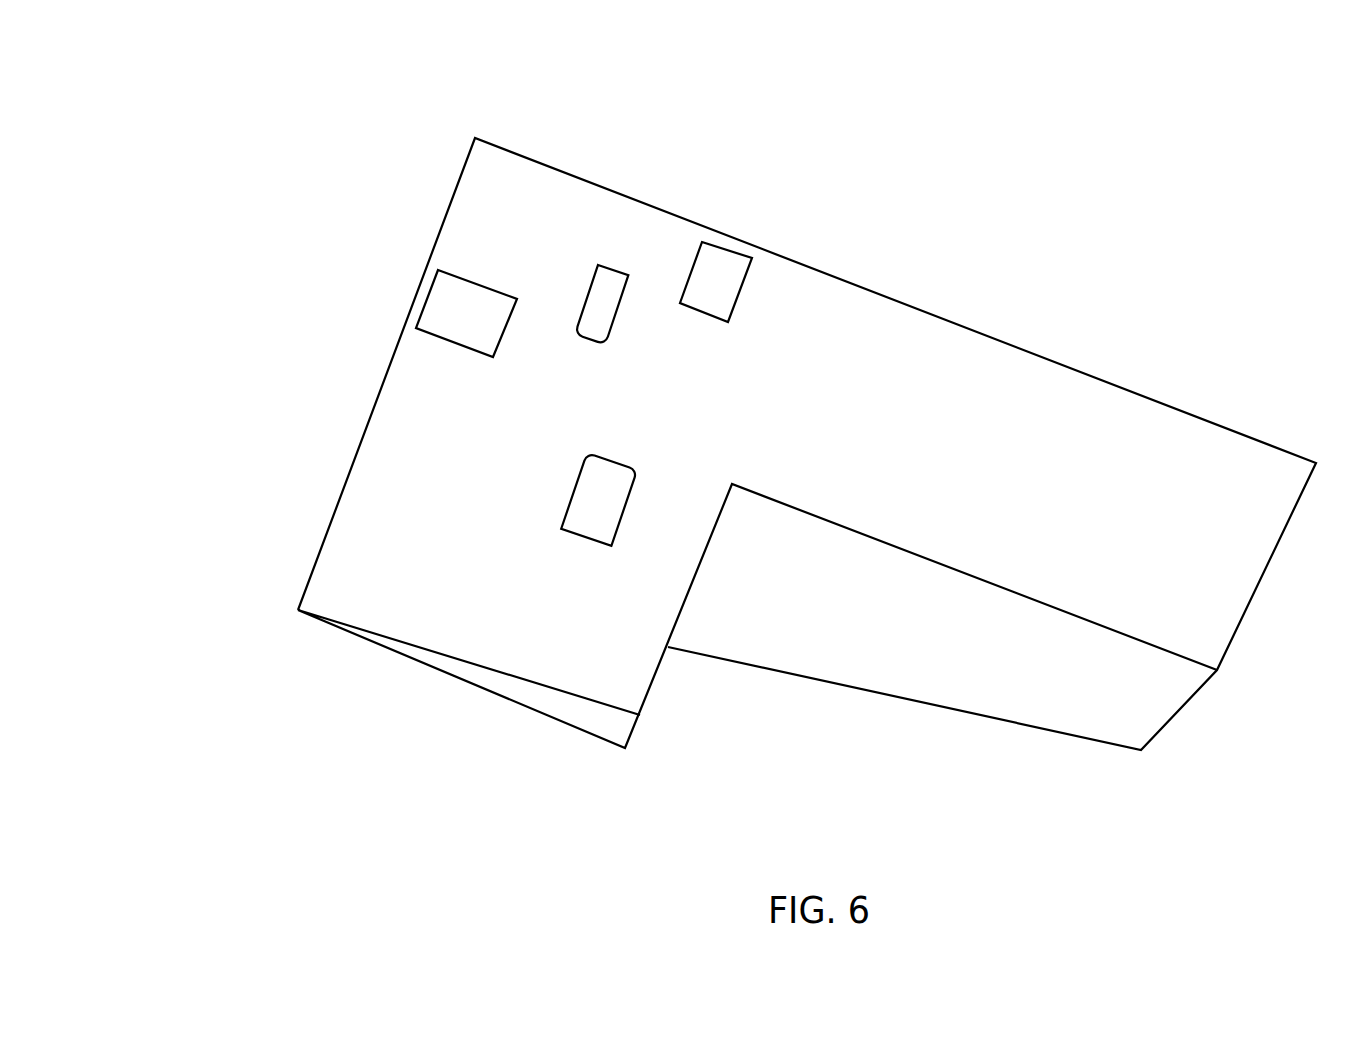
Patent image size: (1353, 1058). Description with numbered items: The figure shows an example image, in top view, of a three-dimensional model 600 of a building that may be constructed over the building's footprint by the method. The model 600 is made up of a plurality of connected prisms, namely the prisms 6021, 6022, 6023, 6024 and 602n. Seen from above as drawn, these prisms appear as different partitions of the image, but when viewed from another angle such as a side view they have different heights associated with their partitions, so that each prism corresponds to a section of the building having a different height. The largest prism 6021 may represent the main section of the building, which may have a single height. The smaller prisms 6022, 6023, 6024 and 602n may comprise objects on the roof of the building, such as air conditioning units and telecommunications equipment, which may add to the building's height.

The three-dimensional model 600 is at (138, 49).
The prism 6021 is at (1105, 402).
The prism 6022 is at (433, 322).
The prism 6023 is at (612, 277).
The prism 6024 is at (723, 260).
The prism 602n is at (612, 468).